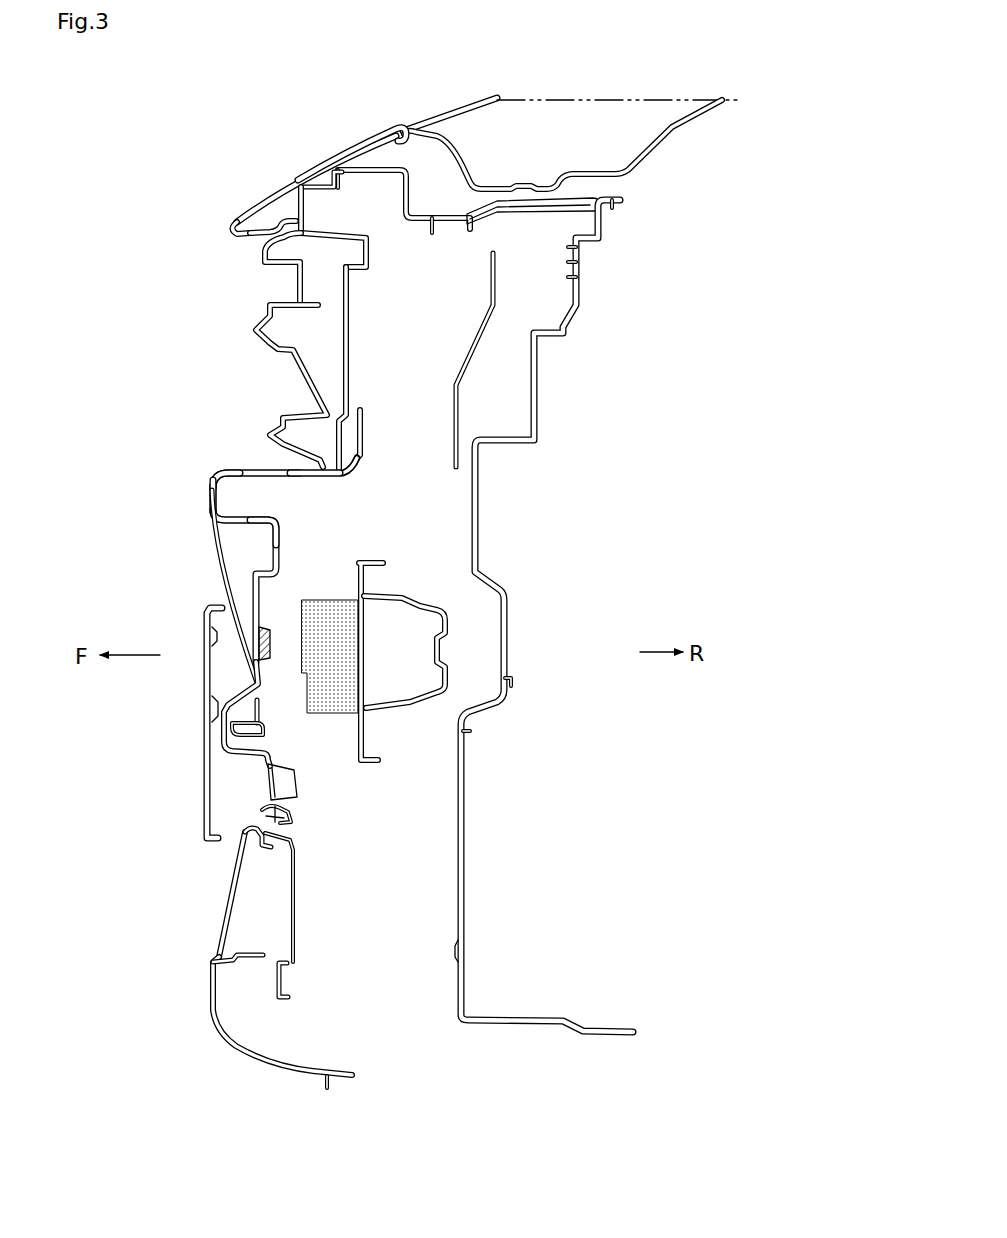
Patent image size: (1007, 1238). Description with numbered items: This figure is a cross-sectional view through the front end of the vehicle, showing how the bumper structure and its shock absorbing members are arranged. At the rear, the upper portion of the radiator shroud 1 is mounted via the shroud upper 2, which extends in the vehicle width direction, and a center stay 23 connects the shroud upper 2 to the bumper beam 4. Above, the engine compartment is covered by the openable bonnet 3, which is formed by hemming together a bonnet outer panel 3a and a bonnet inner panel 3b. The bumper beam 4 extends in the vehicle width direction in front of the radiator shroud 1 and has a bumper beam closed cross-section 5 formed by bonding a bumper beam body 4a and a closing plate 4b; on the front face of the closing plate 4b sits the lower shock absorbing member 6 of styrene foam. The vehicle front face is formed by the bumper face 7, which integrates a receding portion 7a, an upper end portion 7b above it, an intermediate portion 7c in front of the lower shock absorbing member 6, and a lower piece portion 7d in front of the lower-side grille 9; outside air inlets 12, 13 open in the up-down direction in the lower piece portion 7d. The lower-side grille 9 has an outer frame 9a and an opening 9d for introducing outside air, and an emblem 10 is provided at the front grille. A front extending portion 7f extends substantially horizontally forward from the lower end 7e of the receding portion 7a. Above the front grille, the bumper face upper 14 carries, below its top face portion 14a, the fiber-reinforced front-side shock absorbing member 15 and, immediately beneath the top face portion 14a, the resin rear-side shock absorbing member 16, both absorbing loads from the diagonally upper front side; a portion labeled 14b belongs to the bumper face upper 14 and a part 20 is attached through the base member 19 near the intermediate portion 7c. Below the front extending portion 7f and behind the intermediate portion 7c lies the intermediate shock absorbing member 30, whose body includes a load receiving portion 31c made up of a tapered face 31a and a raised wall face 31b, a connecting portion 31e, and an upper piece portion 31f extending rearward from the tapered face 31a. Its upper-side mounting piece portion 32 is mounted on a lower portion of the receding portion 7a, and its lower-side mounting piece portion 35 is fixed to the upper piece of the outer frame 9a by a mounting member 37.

The radiator shroud 1 is at (470, 513).
The shroud upper 2 is at (594, 197).
The bonnet 3 is at (570, 127).
The bonnet outer panel 3a is at (464, 104).
The bonnet inner panel 3b is at (670, 140).
The bumper beam 4 is at (404, 643).
The bumper beam body 4a is at (420, 606).
The closing plate 4b is at (367, 623).
The bumper beam closed cross-section 5 is at (388, 683).
The lower shock absorbing member 6 is at (306, 602).
The bumper face 7 is at (272, 469).
The receding portion 7a is at (351, 318).
The upper end portion 7b is at (312, 222).
The intermediate portion 7c is at (211, 538).
The lower piece portion 7d is at (221, 742).
The lower end 7e is at (340, 479).
The front extending portion 7f is at (258, 470).
The lower-side grille 9 is at (284, 817).
The outer frame 9a is at (257, 712).
The opening 9d is at (300, 786).
The emblem 10 is at (257, 261).
The outside air inlet 12 is at (258, 787).
The outside air inlet 13 is at (279, 910).
The bumper face upper 14 is at (286, 181).
The top face portion 14a is at (264, 196).
The roof trim lower portion 14b is at (250, 233).
The front-side shock absorbing member 15 is at (373, 175).
The rear-side shock absorbing member 16 is at (348, 150).
The base member 19 is at (210, 677).
The weather strip 20 is at (187, 723).
The center stay 23 is at (461, 364).
The intermediate shock absorbing member 30 is at (272, 471).
The tapered face 31a is at (218, 470).
The raised wall face 31b is at (211, 496).
The load receiving portion 31c is at (225, 498).
The connecting portion 31e is at (249, 523).
The upper piece portion 31f is at (311, 486).
The upper-side mounting piece portion 32 is at (366, 436).
The lower-side mounting piece portion 35 is at (262, 608).
The mounting member 37 is at (260, 735).